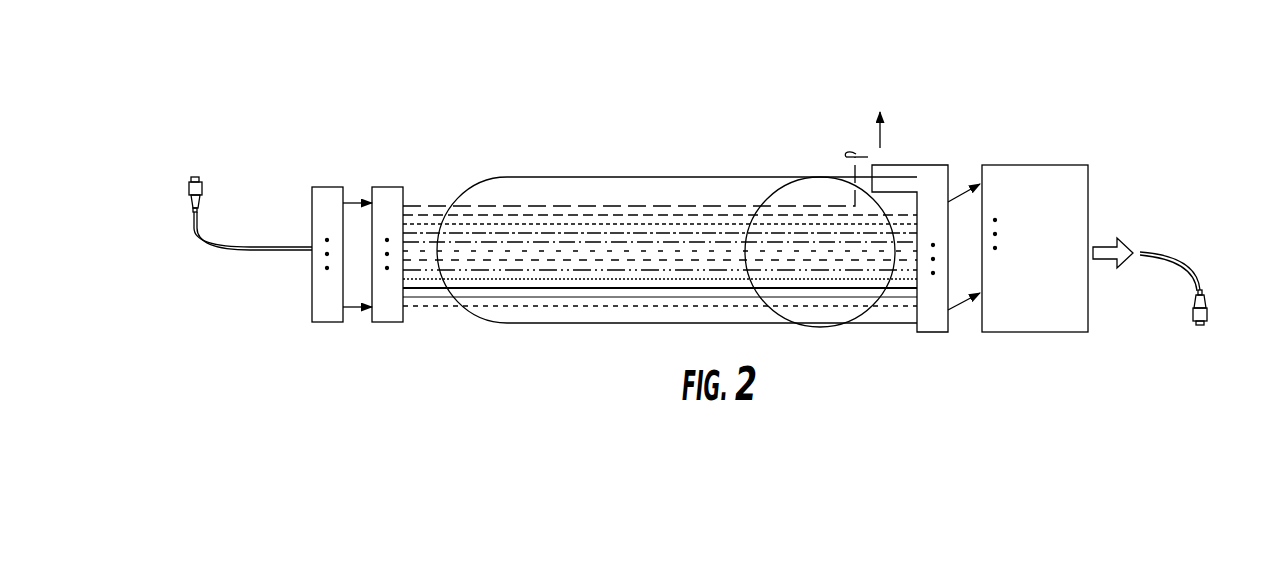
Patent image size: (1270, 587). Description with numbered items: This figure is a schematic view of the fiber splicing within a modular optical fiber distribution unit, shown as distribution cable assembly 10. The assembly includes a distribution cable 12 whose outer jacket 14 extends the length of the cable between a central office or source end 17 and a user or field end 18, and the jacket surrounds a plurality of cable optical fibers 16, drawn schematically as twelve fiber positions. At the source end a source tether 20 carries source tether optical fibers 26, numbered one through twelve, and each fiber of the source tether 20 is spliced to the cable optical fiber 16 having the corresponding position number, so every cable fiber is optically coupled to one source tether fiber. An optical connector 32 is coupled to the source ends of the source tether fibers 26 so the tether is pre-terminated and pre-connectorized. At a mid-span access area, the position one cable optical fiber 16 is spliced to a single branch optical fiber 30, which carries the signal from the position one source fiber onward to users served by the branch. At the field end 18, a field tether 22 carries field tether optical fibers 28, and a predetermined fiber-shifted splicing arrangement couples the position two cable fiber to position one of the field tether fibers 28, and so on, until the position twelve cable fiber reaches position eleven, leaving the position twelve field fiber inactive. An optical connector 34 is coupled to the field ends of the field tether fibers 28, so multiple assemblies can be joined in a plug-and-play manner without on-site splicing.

The distribution cable assembly 10 is at (1100, 115).
The cable 12 is at (738, 134).
The outer jacket 14 is at (607, 177).
The cable optical fibers 16 is at (392, 187).
The source end 17 is at (269, 88).
The field end 18 is at (1219, 181).
The source tether 20 is at (225, 248).
The field tether 22 is at (1170, 252).
The source tether optical fibers 26 is at (330, 187).
The field tether optical fibers 28 is at (1090, 180).
The branch optical fiber 30 is at (853, 163).
The optical connector 32 is at (203, 188).
The optical connector 34 is at (1207, 297).